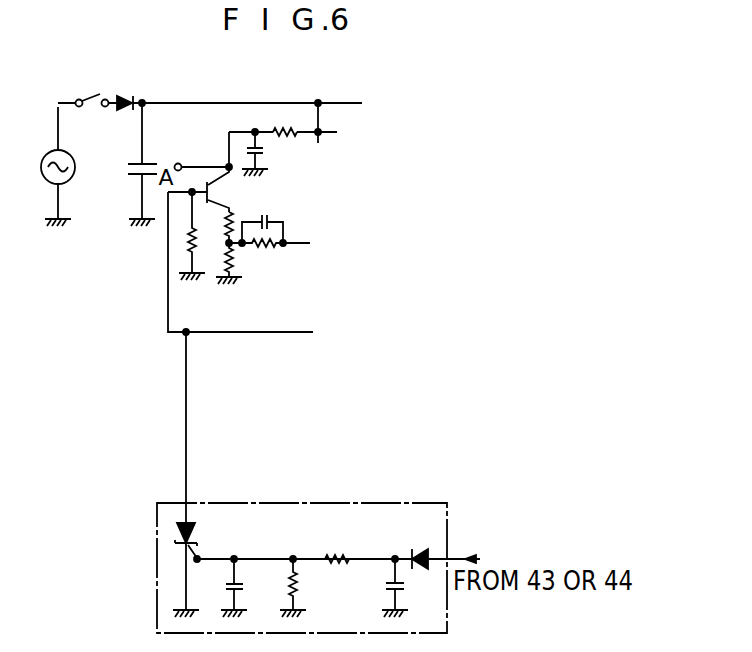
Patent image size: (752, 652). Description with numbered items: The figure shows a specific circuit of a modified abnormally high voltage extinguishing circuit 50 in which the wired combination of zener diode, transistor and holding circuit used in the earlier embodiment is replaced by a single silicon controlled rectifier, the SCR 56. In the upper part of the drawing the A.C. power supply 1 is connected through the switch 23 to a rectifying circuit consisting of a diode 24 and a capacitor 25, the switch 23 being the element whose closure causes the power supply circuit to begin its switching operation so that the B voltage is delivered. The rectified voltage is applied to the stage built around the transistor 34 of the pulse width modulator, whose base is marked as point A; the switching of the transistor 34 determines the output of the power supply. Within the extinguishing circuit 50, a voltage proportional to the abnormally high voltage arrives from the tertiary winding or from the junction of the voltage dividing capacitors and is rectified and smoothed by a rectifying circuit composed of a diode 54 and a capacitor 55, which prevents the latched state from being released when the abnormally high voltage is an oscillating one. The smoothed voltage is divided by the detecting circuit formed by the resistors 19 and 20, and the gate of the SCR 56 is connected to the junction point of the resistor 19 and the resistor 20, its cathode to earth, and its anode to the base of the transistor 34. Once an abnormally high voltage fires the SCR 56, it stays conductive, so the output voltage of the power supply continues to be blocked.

The A.C. power supply 1 is at (40, 168).
The switch 23 is at (91, 94).
The diode 24 is at (128, 96).
The capacitor 25 is at (152, 164).
The transistor 34 is at (221, 195).
The abnormally high voltage extinguishing circuit 50 is at (157, 541).
The SCR 56 is at (198, 540).
The resistor 19 is at (337, 551).
The resistor 20 is at (300, 578).
The diode 54 is at (414, 550).
The capacitor 55 is at (407, 582).